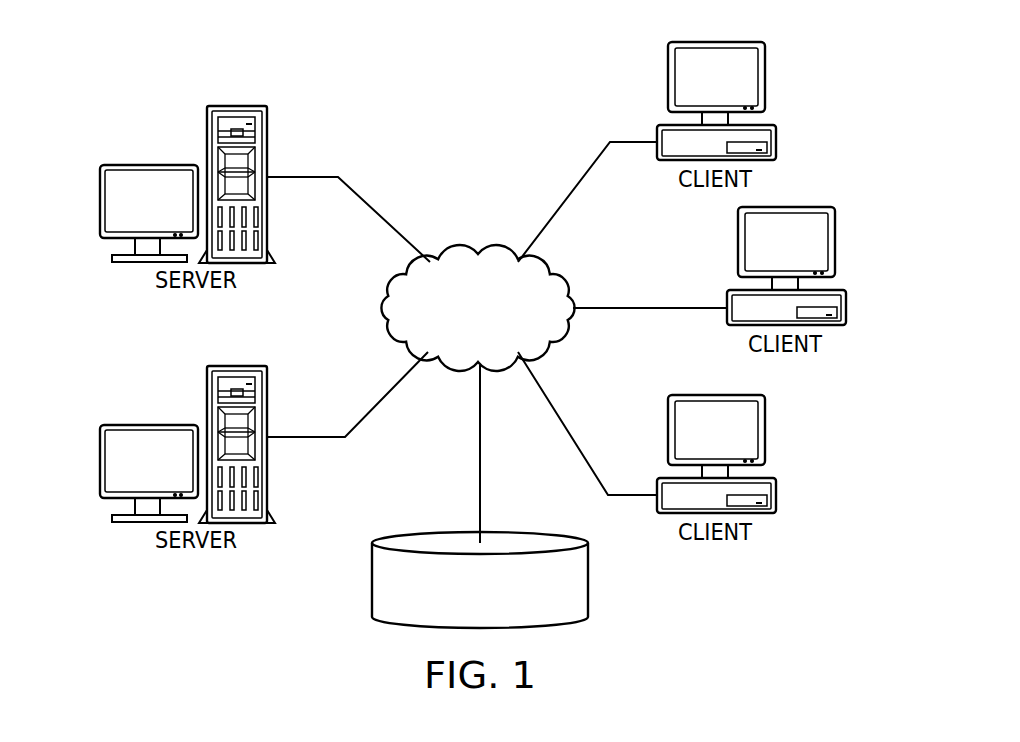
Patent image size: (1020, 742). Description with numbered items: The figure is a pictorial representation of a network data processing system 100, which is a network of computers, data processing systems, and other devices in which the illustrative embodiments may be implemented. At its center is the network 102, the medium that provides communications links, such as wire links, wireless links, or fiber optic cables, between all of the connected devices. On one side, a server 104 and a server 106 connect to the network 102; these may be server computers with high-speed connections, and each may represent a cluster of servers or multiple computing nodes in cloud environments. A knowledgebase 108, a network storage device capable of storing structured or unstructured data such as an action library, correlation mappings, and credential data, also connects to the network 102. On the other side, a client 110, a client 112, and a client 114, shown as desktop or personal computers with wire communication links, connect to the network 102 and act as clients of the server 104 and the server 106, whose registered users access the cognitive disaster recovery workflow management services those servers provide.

The network data processing system 100 is at (346, 92).
The network 102 is at (453, 253).
The server 104 is at (100, 202).
The server 106 is at (100, 460).
The knowledgebase 108 is at (372, 578).
The client 110 is at (777, 132).
The client 112 is at (847, 315).
The client 114 is at (777, 505).